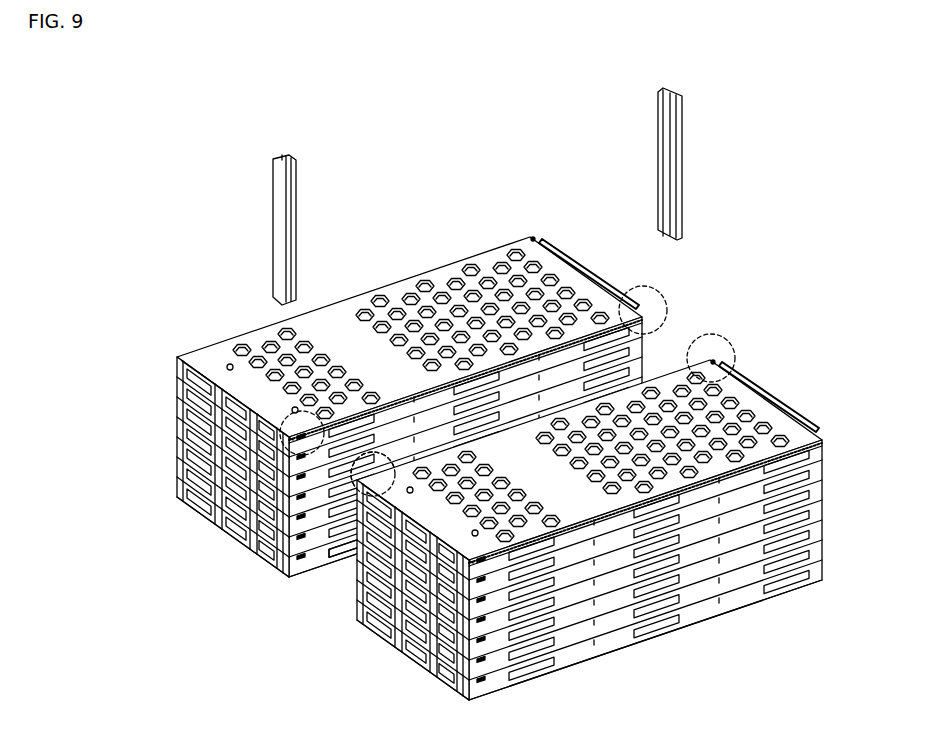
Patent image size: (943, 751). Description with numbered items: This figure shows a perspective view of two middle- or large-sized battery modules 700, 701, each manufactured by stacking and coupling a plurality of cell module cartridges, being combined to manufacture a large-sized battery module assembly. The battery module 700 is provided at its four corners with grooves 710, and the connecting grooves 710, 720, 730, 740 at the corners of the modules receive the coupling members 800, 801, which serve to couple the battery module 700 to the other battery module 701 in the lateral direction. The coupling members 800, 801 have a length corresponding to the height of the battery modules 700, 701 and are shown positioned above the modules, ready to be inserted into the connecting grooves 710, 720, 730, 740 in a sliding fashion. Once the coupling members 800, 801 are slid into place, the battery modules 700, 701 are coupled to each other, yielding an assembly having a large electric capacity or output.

The middle- or large-sized battery module 700 is at (405, 434).
The middle- or large-sized battery module 701 is at (587, 504).
The groove 710 is at (197, 512).
The connecting groove 720 is at (323, 563).
The connecting groove 730 is at (662, 294).
The connecting groove 740 is at (755, 338).
The coupling member 800 is at (278, 226).
The coupling member 801 is at (674, 184).